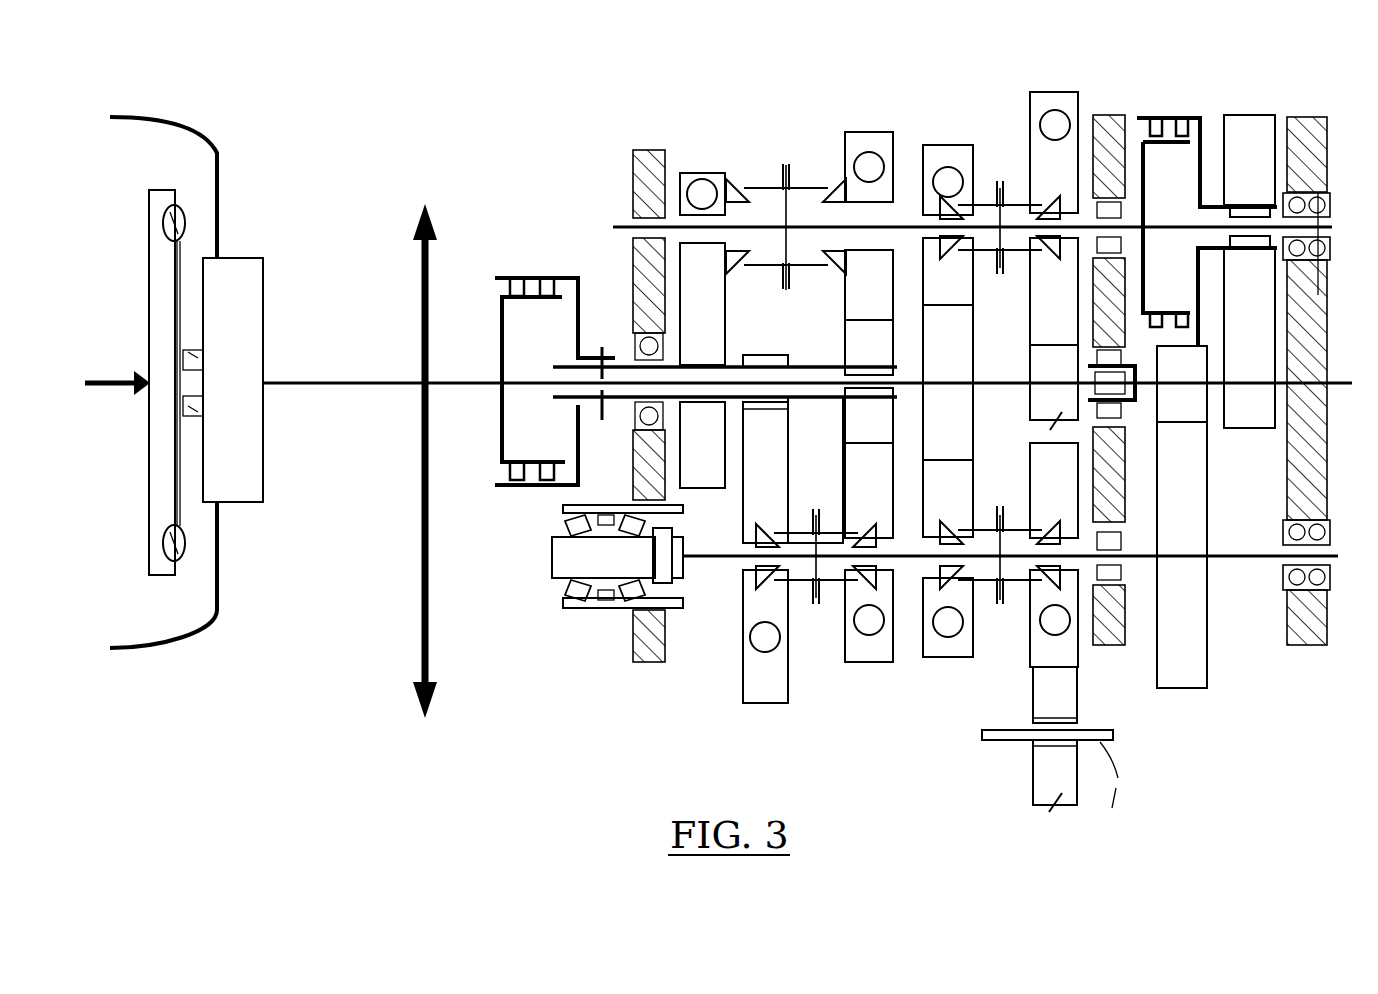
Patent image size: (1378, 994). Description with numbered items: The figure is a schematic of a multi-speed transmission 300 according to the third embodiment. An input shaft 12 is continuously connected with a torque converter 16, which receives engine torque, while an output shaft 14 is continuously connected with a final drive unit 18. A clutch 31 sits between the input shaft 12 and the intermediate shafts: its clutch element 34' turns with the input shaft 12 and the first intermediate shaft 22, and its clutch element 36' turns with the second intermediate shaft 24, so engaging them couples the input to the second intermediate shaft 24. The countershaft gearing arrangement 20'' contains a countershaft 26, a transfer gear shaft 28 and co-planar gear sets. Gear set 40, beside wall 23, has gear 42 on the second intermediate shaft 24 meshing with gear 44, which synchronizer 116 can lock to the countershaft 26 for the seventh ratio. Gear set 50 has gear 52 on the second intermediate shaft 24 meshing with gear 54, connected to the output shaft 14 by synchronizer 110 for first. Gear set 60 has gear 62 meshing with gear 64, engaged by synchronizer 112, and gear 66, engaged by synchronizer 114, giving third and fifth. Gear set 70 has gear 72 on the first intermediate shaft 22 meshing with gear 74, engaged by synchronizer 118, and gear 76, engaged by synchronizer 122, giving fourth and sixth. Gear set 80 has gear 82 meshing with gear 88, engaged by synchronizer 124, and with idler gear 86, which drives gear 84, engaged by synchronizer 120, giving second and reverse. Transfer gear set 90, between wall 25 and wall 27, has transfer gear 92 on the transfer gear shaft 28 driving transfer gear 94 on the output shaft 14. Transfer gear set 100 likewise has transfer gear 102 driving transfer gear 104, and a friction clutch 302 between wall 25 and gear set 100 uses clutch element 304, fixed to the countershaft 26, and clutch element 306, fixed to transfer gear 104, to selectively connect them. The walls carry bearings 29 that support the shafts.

The multi-speed transmission 300 is at (266, 114).
The torque converter 16 is at (149, 489).
The input shaft 12 is at (313, 388).
The clutch 31 is at (473, 237).
The clutch element 34' is at (507, 376).
The clutch element 36' is at (555, 350).
The first intermediate shaft 22 is at (625, 380).
The countershaft 26 is at (622, 225).
The wall 23 is at (645, 663).
The final drive unit 18 is at (576, 617).
The output shaft 14 is at (717, 553).
The gear set 40 is at (676, 287).
The gear 44 is at (702, 304).
The gear 42 is at (702, 445).
The synchronizer 116 is at (741, 185).
The synchronizer 114 is at (801, 273).
The gear 52 is at (770, 355).
The second intermediate shaft 24 is at (826, 400).
The synchronizer 112 is at (831, 526).
The synchronizer 110 is at (804, 589).
The gear 54 is at (765, 636).
The gear set 50 is at (770, 676).
The gear set 60 is at (896, 361).
The gear 66 is at (869, 285).
The gear 62 is at (869, 347).
The gear 64 is at (869, 463).
The gear set 70 is at (948, 440).
The gear 76 is at (948, 271).
The gear 72 is at (948, 344).
The gear 74 is at (948, 460).
The synchronizer 124 is at (1019, 196).
The synchronizer 122 is at (986, 261).
The synchronizer 120 is at (1017, 524).
The synchronizer 118 is at (986, 588).
The gear set 80 is at (1050, 415).
The gear 88 is at (1054, 291).
The gear 82 is at (1054, 364).
The gear 84 is at (1054, 490).
The idler gear 86 is at (1055, 776).
The countershaft gearing arrangement 20'' is at (1132, 194).
The wall 25 is at (1107, 647).
The friction clutch 302 is at (1190, 118).
The clutch element 306 is at (1197, 164).
The clutch element 304 is at (1163, 308).
The gear set 100 is at (1281, 235).
The transfer gear 104 is at (1249, 160).
The transfer gear 102 is at (1249, 337).
The bearings 29 is at (1323, 295).
The wall 27 is at (1300, 647).
The gear set 90 is at (1183, 553).
The transfer gear 92 is at (1182, 363).
The transfer gear 94 is at (1182, 516).
The transfer gear shaft 28 is at (1216, 388).